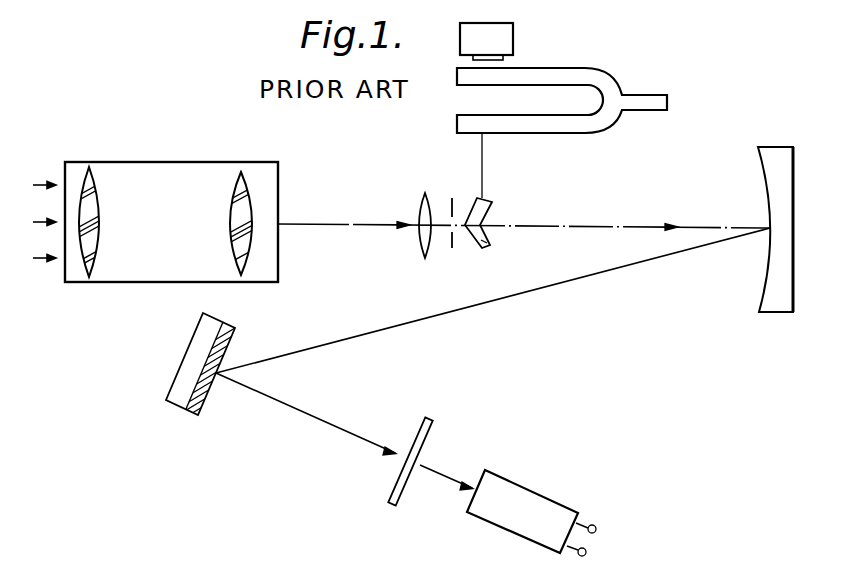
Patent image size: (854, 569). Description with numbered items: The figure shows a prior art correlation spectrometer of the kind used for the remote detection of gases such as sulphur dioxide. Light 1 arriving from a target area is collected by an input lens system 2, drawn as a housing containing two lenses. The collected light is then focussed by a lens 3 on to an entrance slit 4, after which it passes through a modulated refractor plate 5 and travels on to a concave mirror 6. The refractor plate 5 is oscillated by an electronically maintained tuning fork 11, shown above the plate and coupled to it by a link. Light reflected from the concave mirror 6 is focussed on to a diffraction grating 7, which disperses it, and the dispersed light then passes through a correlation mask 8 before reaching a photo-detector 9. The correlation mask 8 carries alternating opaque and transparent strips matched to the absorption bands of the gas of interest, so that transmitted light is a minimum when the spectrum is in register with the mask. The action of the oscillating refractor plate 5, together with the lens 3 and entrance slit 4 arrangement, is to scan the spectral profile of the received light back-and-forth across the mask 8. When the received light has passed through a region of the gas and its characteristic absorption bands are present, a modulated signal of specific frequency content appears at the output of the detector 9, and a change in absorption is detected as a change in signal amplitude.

The light 1 is at (45, 294).
The input lens system 2 is at (137, 258).
The lens 3 is at (423, 243).
The entrance slit 4 is at (453, 242).
The modulated refractor plate 5 is at (490, 250).
The concave mirror 6 is at (775, 293).
The diffraction grating 7 is at (182, 382).
The correlation mask 8 is at (420, 435).
The photo-detector 9 is at (533, 500).
The tuning fork 11 is at (628, 102).